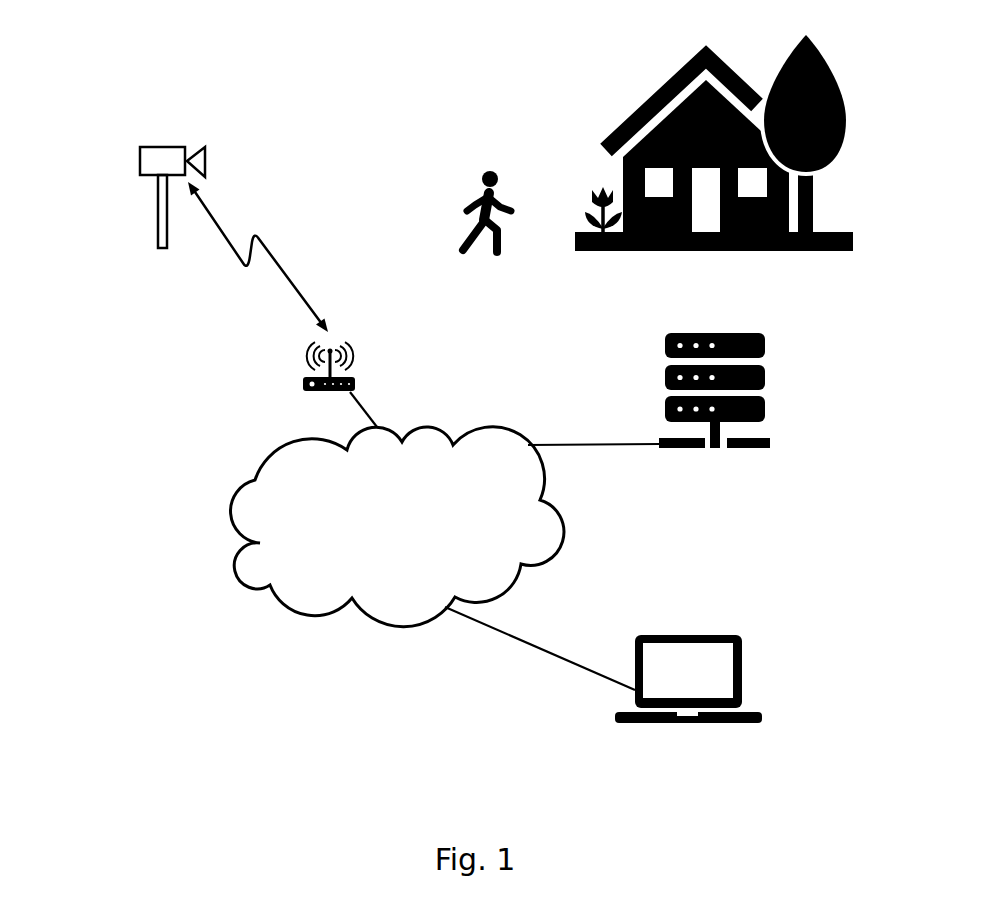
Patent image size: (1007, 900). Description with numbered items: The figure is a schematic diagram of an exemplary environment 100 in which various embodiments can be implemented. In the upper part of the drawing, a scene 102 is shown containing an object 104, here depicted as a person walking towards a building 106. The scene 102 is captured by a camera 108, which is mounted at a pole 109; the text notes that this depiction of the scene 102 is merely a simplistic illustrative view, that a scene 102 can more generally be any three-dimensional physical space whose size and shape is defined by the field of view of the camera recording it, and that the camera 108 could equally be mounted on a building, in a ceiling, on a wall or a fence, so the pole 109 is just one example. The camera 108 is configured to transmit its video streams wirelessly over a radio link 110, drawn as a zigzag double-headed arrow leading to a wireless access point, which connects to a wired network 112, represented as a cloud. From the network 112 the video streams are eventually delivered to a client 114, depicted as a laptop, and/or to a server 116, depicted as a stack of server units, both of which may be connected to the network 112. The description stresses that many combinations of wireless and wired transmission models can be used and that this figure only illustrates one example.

The environment 100 is at (243, 37).
The scene 102 is at (496, 123).
The object 104 is at (467, 207).
The building 106 is at (623, 185).
The camera 108 is at (140, 152).
The pole 109 is at (158, 234).
The radio link 110 is at (266, 286).
The wired network 112 is at (227, 518).
The client 114 is at (742, 660).
The server 116 is at (765, 408).